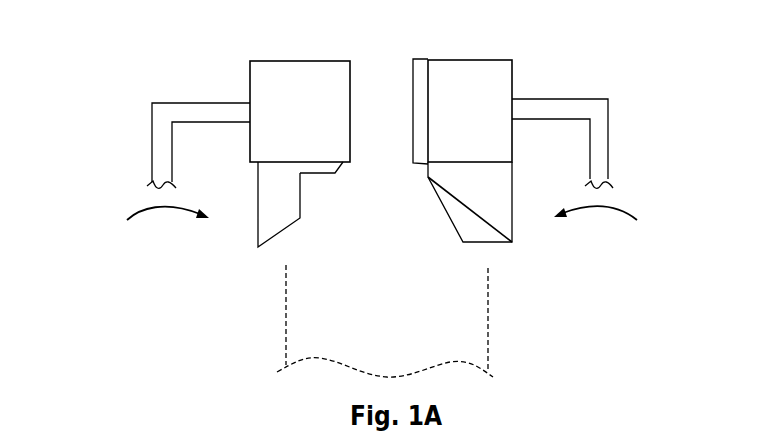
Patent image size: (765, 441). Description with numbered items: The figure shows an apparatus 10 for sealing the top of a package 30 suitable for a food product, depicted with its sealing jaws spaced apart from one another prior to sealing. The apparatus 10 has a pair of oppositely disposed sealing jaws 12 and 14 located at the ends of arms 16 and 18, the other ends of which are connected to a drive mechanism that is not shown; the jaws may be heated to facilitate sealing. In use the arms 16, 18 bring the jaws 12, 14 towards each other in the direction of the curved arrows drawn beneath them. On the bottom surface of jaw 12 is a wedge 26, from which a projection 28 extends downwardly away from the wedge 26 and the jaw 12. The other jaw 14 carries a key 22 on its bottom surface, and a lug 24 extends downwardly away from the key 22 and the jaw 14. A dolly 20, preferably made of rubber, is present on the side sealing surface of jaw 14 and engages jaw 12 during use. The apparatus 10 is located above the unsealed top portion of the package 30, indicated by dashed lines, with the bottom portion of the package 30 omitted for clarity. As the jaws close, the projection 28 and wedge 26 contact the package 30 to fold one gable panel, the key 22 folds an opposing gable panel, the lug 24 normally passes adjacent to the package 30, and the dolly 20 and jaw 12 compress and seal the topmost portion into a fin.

The apparatus 10 is at (112, 78).
The sealing jaw 12 is at (284, 78).
The sealing jaw 14 is at (486, 78).
The arm 16 is at (162, 133).
The arm 18 is at (600, 128).
The dolly 20 is at (420, 77).
The key 22 is at (497, 198).
The lug 24 is at (470, 225).
The wedge 26 is at (315, 168).
The projection 28 is at (288, 208).
The package 30 is at (465, 338).